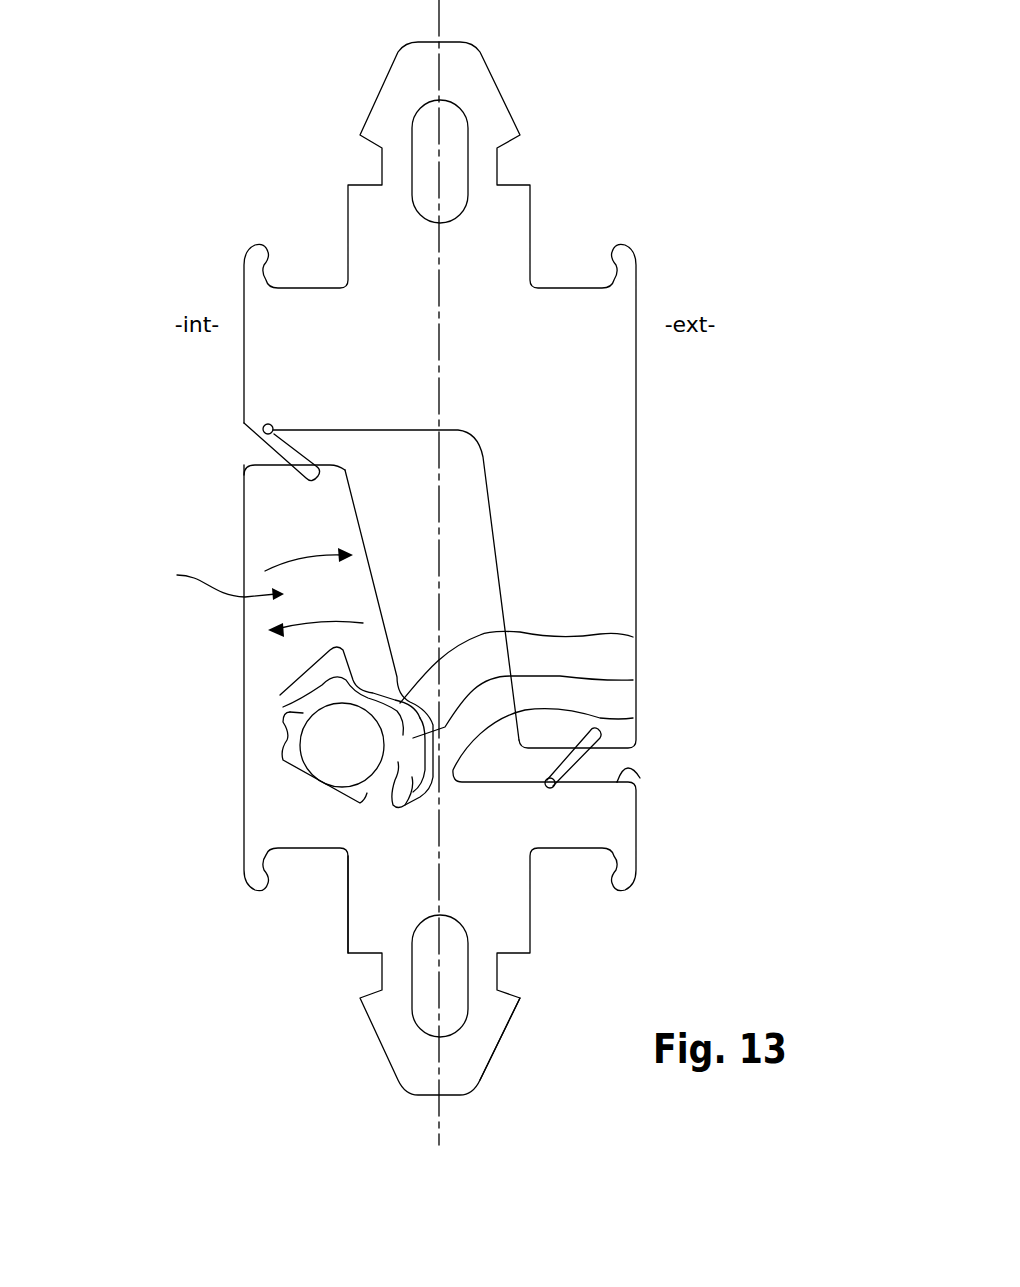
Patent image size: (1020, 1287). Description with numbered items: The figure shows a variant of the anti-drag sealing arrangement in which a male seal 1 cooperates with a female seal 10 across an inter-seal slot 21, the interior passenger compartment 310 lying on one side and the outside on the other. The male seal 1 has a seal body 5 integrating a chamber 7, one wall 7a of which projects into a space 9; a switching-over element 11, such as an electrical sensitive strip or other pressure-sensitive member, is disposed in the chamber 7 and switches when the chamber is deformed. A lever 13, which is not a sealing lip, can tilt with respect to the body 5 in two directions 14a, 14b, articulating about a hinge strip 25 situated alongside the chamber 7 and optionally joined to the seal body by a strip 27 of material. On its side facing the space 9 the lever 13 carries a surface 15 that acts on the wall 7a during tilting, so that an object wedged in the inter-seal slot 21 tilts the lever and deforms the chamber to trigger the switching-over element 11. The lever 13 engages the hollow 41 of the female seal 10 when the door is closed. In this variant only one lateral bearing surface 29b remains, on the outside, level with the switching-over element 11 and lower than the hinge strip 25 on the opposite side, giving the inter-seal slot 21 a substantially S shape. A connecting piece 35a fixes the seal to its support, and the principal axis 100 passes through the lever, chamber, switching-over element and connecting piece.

The male seal 1 is at (321, 1046).
The seal body 5 is at (485, 815).
The chamber 7 is at (357, 793).
The wall of the chamber 7a is at (287, 697).
The space 9 is at (633, 680).
The female seal 10 is at (226, 205).
The switching-over element 11 is at (333, 748).
The lever 13 is at (213, 580).
The tilting direction 14a is at (312, 630).
The tilting direction 14b is at (300, 550).
The surface 15 is at (633, 637).
The inter-seal slot 21 is at (690, 797).
The hinge strip 25 is at (262, 670).
The strip 27 is at (633, 718).
The lateral bearing surface 29b is at (640, 778).
The connecting piece 35a is at (473, 1050).
The hollow 41 is at (462, 525).
The principal axis 100 is at (437, 1120).
The passenger compartment 310 is at (118, 527).